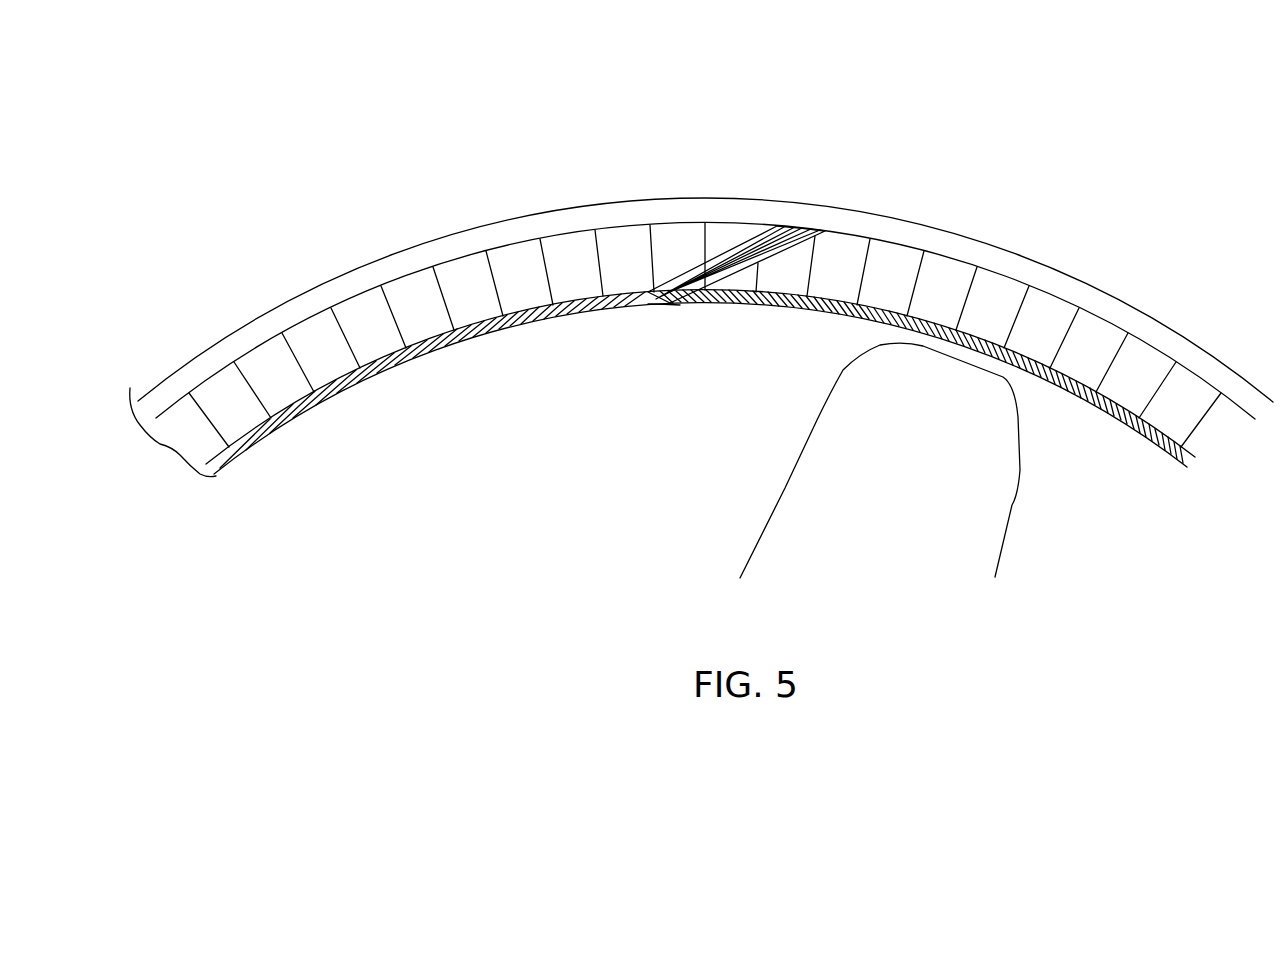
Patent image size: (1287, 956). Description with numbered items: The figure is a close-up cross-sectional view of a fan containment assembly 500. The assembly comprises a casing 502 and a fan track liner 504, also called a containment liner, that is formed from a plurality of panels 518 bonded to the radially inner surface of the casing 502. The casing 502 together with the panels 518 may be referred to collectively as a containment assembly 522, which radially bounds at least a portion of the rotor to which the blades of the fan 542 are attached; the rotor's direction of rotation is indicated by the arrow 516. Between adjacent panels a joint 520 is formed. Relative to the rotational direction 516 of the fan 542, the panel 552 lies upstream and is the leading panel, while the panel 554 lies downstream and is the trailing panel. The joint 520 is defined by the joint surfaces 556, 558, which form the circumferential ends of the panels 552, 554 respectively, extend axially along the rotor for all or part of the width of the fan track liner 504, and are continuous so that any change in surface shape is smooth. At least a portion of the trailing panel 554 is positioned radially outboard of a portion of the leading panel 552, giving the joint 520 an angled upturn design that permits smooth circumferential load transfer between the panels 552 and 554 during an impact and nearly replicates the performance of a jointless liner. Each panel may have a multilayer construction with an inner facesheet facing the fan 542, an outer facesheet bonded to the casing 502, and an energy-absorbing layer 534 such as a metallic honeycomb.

The fan containment assembly 500 is at (287, 103).
The casing 502 is at (355, 285).
The fan track liner 504 is at (790, 318).
The rotational direction of the rotor 516 is at (788, 446).
The panels 518 is at (961, 300).
The joint 520 is at (662, 311).
The containment assembly 522 is at (172, 432).
The energy-absorbing layer 534 is at (1223, 440).
The fan 542 is at (911, 488).
The leading panel 552 is at (1132, 384).
The trailing panel 554 is at (516, 278).
The joint surface 556 is at (728, 273).
The joint surface 558 is at (659, 299).